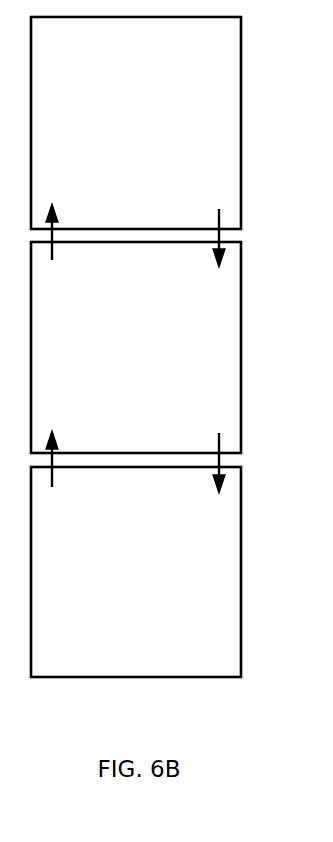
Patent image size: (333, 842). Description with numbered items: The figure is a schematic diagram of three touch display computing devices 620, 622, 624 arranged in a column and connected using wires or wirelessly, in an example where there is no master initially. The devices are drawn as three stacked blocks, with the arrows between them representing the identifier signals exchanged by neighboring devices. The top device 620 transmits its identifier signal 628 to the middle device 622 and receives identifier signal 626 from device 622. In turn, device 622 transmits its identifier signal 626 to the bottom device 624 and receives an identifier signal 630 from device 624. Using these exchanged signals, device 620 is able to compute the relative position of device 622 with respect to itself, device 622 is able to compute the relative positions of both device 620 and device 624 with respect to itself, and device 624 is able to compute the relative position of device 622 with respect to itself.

The touch display computing device 620 is at (115, 133).
The touch display computing device 622 is at (115, 358).
The touch display computing device 624 is at (115, 583).
The identifier signal 626 is at (62, 215).
The identifier signal 628 is at (225, 222).
The identifier signal 630 is at (57, 476).